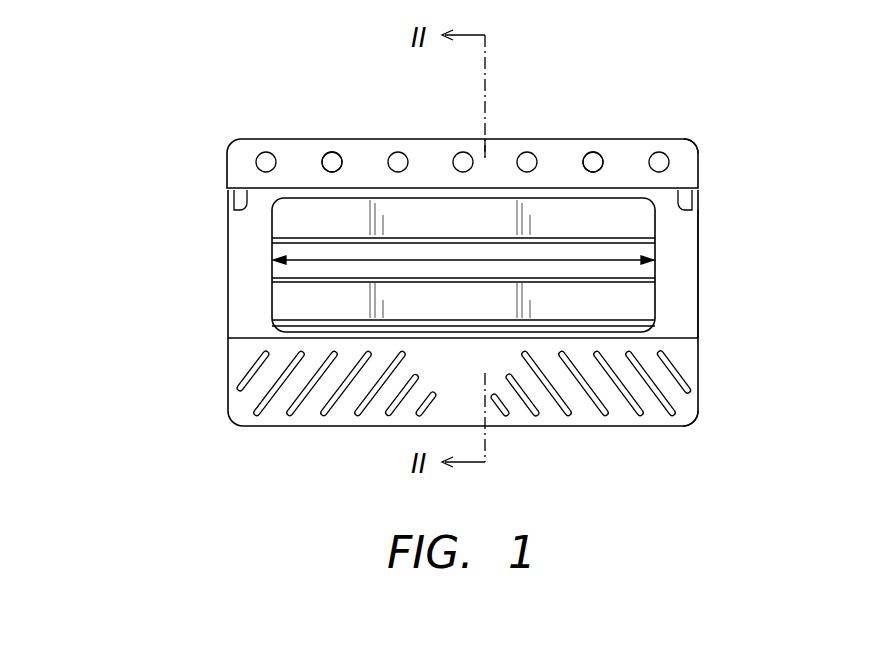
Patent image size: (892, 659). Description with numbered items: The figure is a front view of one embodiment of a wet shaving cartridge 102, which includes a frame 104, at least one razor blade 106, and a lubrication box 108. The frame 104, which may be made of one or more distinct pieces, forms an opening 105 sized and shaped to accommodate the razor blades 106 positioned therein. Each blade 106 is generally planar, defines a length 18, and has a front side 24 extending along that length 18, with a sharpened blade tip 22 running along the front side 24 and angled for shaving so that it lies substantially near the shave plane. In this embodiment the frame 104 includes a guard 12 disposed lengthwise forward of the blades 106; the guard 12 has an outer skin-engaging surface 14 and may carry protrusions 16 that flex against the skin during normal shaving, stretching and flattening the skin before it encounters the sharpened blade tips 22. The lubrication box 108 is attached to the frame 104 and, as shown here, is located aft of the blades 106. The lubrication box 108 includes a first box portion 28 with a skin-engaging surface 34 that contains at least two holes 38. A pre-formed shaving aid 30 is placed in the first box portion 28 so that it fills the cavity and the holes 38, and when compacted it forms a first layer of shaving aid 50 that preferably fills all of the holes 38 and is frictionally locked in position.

The shaving cartridge 102 is at (166, 55).
The lubrication box 108 is at (702, 143).
The first box portion 28 is at (232, 141).
The holes 38 is at (270, 142).
The shaving aid 30 is at (338, 170).
The skin-engaging surface 34 is at (492, 160).
The first layer of shaving aid 50 is at (597, 168).
The razor blade 106 is at (638, 219).
The frame 104 is at (700, 262).
The opening 105 is at (270, 260).
The length 18 is at (402, 260).
The sharpened blade tip 22 is at (625, 283).
The front side 24 is at (313, 283).
The protrusions 16 is at (246, 368).
The guard 12 is at (703, 371).
The outer skin-engaging surface 14 is at (680, 407).